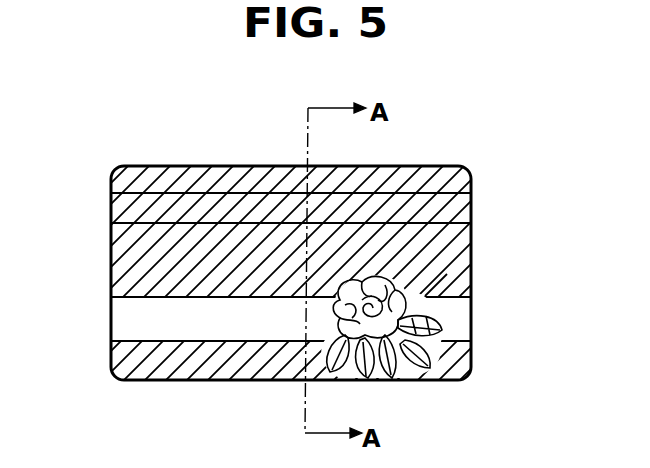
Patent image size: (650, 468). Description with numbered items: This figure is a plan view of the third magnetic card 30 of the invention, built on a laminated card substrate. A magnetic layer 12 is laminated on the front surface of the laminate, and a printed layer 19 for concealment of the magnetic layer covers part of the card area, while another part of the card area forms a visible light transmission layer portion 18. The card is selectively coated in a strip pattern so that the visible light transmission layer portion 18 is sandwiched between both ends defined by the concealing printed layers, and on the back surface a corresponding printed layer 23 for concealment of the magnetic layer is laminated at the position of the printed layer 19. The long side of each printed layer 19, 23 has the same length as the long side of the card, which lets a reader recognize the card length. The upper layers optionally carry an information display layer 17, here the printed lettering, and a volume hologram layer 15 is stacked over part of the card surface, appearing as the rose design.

The third magnetic card 30 is at (103, 151).
The magnetic layer 12 is at (471, 207).
The printed layer for concealment of the magnetic layer 19 is at (471, 244).
The printed layer for concealment of the magnetic layer 23 is at (462, 372).
The visible light transmission layer portion 18 is at (450, 322).
The volume hologram layer 15 is at (441, 279).
The information display layer 17 is at (326, 233).